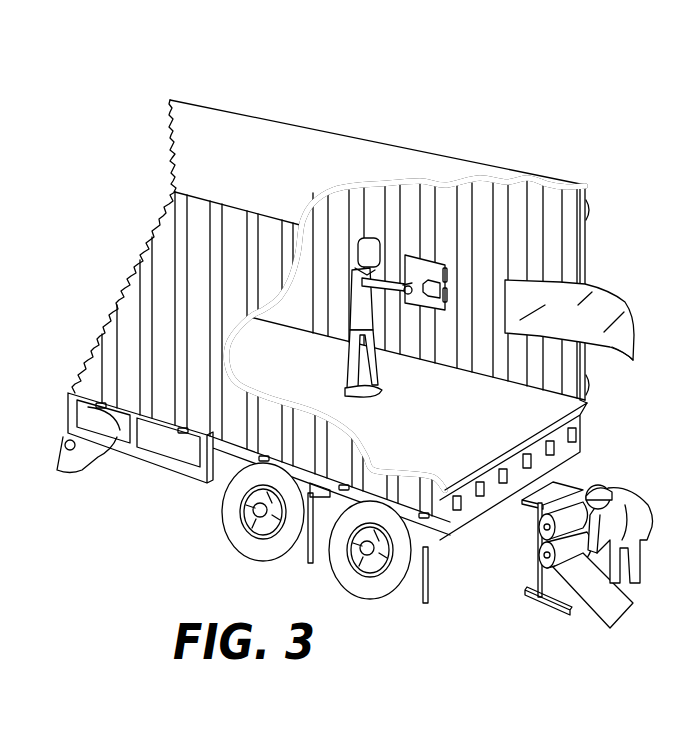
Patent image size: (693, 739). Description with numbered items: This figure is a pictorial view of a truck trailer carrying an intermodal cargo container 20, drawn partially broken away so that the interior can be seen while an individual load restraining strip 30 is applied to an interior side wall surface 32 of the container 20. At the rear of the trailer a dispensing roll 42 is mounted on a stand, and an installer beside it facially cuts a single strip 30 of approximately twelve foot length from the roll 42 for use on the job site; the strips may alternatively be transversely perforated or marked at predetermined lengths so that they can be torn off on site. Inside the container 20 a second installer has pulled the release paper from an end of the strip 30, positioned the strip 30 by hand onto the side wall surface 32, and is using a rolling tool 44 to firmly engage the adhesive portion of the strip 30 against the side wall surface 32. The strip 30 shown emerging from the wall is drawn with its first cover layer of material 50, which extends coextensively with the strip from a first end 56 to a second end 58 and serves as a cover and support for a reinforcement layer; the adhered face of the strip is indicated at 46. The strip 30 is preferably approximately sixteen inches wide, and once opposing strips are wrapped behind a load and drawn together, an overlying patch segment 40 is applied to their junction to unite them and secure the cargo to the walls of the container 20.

The intermodal cargo container 20 is at (110, 220).
The load restraining strip 30 is at (630, 618).
The interior side wall surface 32 is at (508, 215).
The overlying patch segment 40 is at (527, 530).
The dispensing roll 42 is at (547, 568).
The rolling tool 44 is at (428, 320).
The adhesive surface of strip 46 is at (618, 352).
The first cover layer of material 50 is at (612, 315).
The first end 56 is at (407, 270).
The second end 58 is at (636, 338).